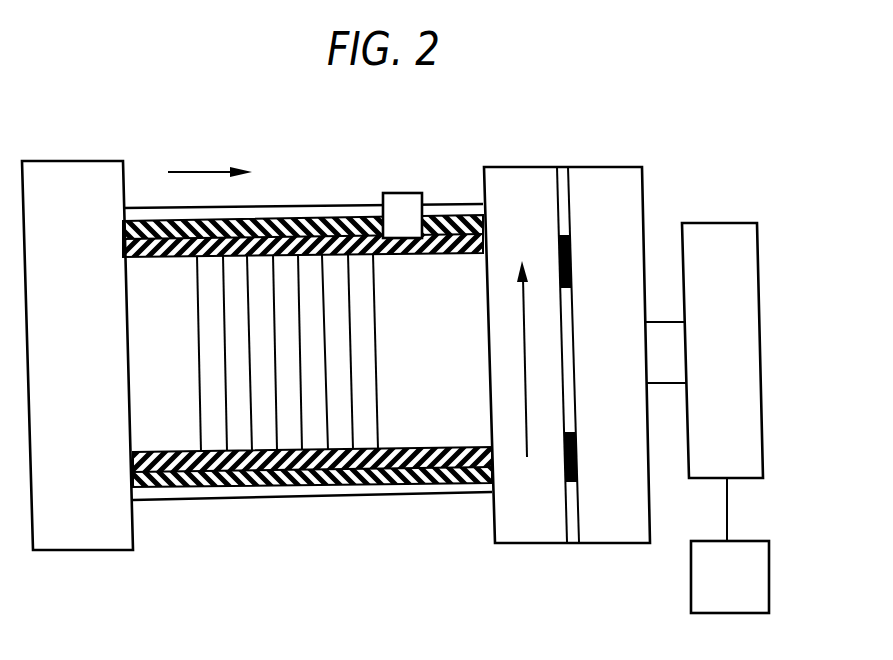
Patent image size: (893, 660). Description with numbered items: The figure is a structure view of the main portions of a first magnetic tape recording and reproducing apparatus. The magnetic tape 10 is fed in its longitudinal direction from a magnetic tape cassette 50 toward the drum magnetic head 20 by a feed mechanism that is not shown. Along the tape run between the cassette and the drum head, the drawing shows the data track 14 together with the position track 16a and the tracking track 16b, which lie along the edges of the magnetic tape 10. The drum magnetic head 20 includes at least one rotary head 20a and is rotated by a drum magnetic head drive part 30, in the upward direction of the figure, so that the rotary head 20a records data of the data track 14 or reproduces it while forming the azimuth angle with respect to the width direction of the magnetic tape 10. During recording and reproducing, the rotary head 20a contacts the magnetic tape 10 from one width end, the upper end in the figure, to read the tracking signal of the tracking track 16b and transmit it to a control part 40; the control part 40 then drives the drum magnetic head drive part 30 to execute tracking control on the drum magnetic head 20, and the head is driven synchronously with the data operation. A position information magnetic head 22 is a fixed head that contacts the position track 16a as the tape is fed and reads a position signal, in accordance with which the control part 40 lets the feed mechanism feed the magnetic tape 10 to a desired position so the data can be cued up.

The magnetic tape 10 is at (273, 500).
The data track 14 is at (200, 370).
The position track 16a is at (285, 221).
The tracking track 16b is at (399, 256).
The drum magnetic head 20 is at (600, 167).
The rotary head 20a is at (570, 261).
The position information magnetic head 22 is at (405, 193).
The drum magnetic head drive part 30 is at (718, 223).
The control part 40 is at (757, 541).
The magnetic tape cassette 50 is at (73, 161).